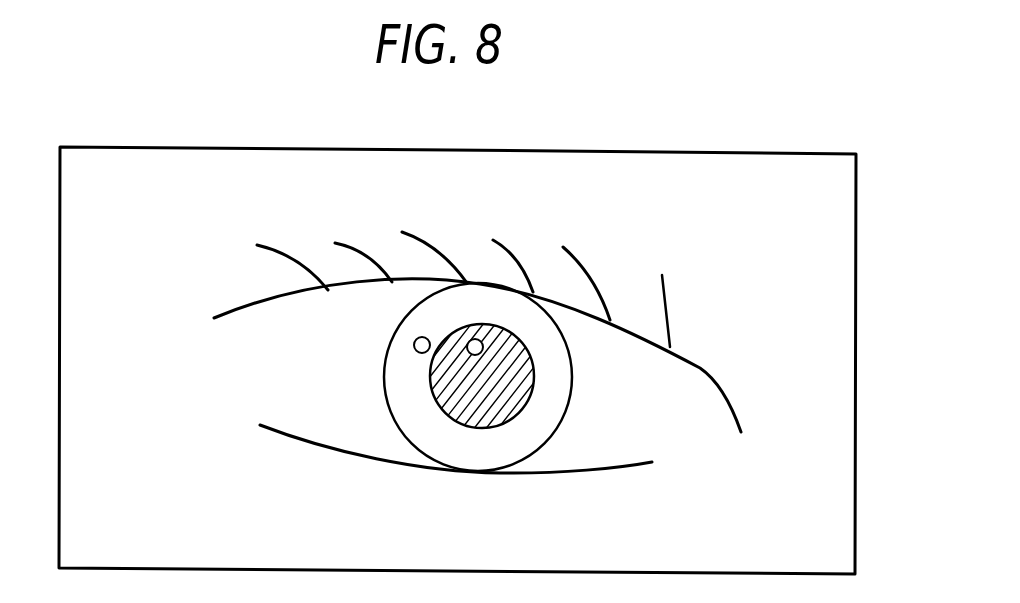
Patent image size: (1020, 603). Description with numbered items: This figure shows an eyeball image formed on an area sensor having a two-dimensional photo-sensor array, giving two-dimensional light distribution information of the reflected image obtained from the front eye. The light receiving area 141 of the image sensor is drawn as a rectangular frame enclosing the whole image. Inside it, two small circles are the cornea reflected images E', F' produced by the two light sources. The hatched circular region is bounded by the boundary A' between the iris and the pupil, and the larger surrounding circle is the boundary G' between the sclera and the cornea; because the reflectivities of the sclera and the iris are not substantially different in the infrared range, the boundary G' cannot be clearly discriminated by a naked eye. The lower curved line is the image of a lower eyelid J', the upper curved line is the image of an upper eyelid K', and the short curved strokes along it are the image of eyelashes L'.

The light receiving area 141 is at (735, 154).
The cornea reflected image E' is at (381, 327).
The cornea reflected image F' is at (539, 340).
The boundary between the iris and the pupil A' is at (522, 376).
The boundary between the sclera and the cornea G' is at (444, 390).
The image of a lower eyelid J' is at (456, 475).
The image of an upper eyelid K' is at (477, 355).
The image of eyelashes L' is at (495, 289).